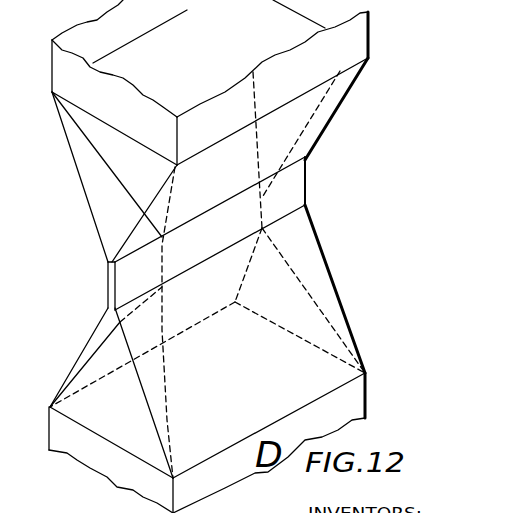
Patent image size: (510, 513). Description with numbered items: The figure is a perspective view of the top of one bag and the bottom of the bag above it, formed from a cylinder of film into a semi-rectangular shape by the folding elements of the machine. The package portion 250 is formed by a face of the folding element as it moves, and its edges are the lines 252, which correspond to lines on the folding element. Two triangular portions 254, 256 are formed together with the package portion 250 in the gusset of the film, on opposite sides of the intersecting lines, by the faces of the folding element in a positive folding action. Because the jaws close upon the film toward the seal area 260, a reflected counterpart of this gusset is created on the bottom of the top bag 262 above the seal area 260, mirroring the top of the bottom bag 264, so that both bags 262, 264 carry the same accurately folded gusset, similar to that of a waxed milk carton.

The package portion 250 is at (158, 169).
The lines 252 is at (167, 393).
The triangular portion 254 is at (95, 177).
The triangular portion 256 is at (127, 243).
The seal area 260 is at (306, 180).
The top bag 262 is at (340, 74).
The bottom bag 264 is at (262, 351).